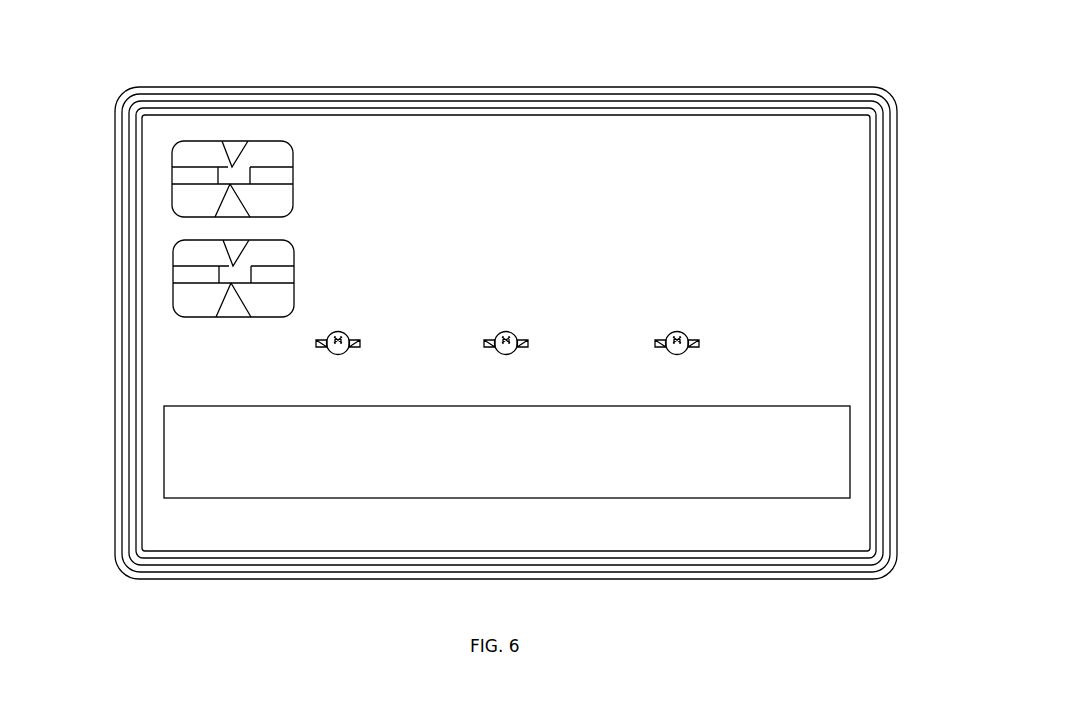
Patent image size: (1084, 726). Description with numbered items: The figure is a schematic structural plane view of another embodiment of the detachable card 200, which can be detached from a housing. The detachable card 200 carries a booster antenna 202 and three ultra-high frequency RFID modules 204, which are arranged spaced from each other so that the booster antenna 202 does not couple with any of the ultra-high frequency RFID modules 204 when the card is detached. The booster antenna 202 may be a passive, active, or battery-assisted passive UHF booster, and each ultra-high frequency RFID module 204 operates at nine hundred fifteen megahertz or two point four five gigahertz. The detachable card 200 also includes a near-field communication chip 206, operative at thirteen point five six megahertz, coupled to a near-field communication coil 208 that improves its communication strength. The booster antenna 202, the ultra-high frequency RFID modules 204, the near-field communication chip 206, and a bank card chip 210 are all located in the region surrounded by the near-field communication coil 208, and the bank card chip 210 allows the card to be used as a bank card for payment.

The detachable card 200 is at (512, 53).
The booster antenna 202 is at (803, 405).
The ultra-high frequency RFID module 204 is at (340, 328).
The near-field communication chip 206 is at (172, 171).
The near-field communication coil 208 is at (116, 113).
The bank card chip 210 is at (173, 276).